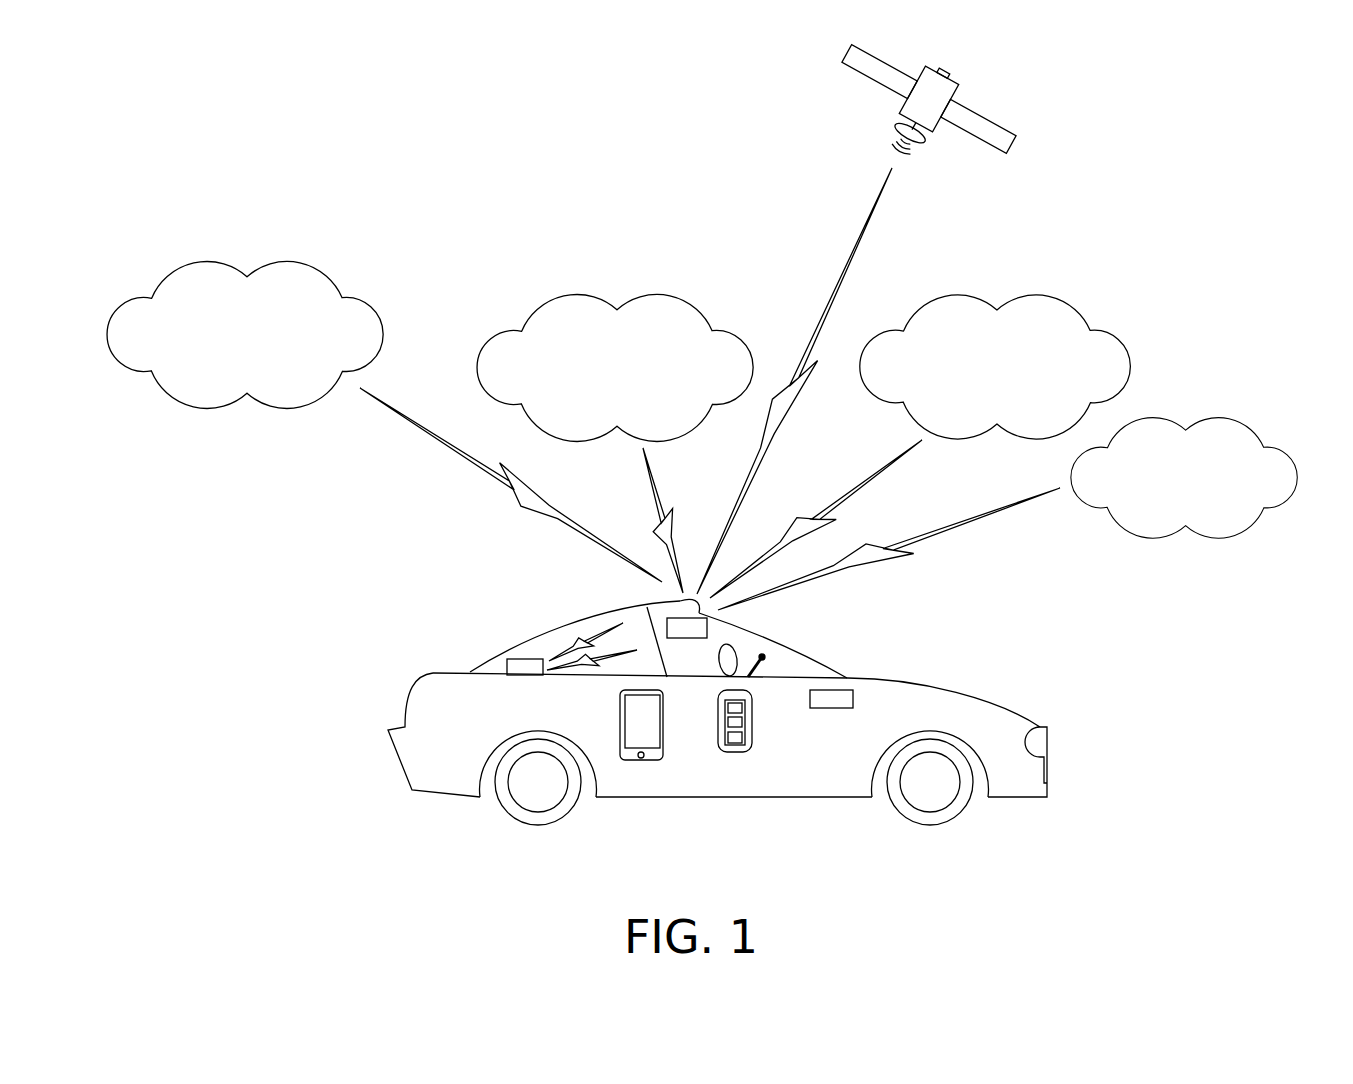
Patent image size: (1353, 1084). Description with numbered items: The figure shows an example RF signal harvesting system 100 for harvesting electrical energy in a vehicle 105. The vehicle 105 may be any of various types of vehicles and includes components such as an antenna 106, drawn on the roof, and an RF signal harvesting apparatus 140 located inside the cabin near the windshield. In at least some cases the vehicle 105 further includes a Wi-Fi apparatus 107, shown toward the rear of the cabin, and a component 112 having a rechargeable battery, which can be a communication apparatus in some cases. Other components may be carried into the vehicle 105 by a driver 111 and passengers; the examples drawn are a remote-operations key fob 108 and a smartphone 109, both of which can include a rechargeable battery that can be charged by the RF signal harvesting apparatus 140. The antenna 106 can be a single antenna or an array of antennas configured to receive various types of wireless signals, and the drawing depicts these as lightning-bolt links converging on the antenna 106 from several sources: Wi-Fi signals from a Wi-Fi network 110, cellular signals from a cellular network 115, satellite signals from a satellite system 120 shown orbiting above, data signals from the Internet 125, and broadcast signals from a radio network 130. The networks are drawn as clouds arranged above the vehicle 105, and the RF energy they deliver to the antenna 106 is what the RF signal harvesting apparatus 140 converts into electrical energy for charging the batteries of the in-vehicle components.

The RF signal harvesting system 100 is at (1209, 149).
The vehicle 105 is at (1001, 630).
The antenna 106 is at (643, 605).
The Wi-Fi apparatus 107 is at (520, 675).
The remote-operations key fob 108 is at (737, 752).
The smartphone 109 is at (643, 760).
The Wi-Fi network 110 is at (327, 310).
The driver 111 is at (745, 651).
The component 112 is at (827, 708).
The cellular network 115 is at (696, 342).
The satellite system 120 is at (850, 125).
The Internet 125 is at (1071, 342).
The radio network 130 is at (1241, 450).
The RF signal harvesting apparatus 140 is at (670, 638).